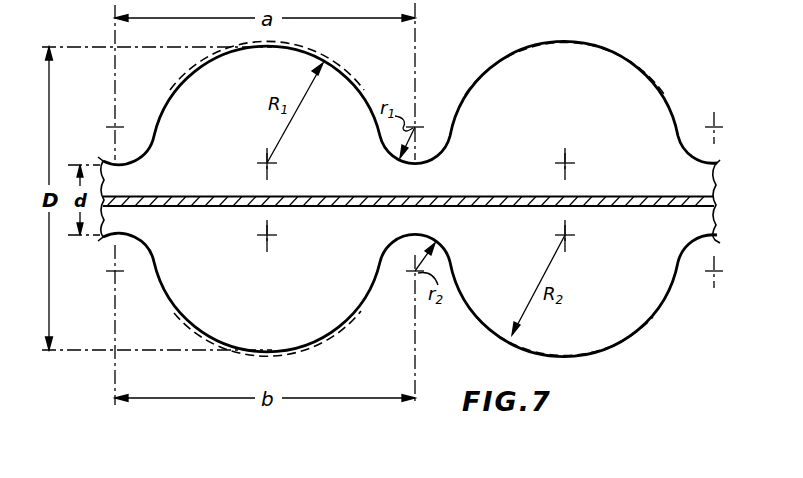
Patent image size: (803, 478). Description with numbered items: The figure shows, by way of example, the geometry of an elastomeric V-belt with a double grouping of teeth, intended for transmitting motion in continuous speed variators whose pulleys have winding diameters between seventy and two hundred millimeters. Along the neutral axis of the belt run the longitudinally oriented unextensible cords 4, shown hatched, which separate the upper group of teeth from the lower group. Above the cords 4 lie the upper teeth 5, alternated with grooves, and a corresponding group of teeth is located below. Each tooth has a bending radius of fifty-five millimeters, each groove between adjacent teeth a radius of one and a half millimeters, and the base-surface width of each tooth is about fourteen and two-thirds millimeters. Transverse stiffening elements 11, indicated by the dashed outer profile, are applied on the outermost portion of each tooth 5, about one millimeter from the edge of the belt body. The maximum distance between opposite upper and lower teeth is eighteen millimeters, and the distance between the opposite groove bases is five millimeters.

The unextensible cords 4 is at (200, 196).
The teeth 5 is at (657, 119).
The stiffening elements 11 is at (520, 52).